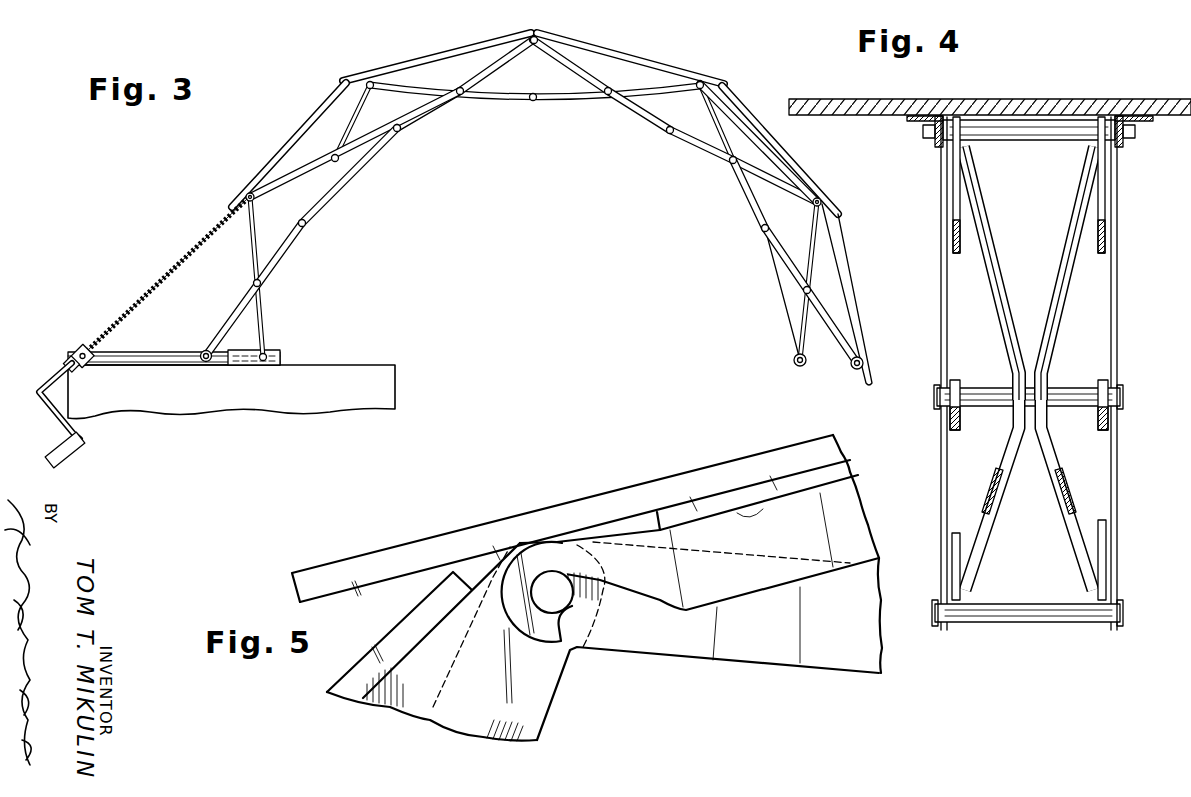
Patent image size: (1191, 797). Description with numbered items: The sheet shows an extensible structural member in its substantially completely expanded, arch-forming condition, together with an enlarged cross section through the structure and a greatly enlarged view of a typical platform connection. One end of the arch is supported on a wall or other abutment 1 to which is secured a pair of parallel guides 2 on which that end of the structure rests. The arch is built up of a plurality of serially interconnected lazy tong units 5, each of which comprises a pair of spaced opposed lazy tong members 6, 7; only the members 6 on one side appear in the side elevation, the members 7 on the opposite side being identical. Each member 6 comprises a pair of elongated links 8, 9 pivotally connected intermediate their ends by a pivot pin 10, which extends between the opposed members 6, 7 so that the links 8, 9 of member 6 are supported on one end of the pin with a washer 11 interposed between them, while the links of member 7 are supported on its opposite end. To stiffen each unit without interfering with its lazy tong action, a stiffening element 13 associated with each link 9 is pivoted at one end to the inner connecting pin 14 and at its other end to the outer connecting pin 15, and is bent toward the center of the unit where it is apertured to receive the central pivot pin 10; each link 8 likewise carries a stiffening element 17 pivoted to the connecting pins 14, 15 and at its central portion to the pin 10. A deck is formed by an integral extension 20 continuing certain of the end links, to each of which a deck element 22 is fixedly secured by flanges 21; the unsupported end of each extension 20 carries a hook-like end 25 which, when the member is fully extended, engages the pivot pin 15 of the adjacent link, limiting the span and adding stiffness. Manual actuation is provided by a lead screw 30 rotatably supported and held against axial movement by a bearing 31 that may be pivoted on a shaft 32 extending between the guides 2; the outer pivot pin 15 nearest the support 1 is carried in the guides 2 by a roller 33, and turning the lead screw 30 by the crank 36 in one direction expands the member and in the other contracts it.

In FIG. 3, the wall or abutment 1 is at (369, 357).
In FIG. 3, the parallel guides 2 is at (279, 350).
In FIG. 3, the lazy tong unit 5 is at (294, 266).
In FIG. 3, the lazy tong member 6 is at (240, 268).
In FIG. 4, the lazy tong member 6 is at (932, 360).
In FIG. 4, the lazy tong member 7 is at (1127, 355).
In FIG. 3, the link 8 is at (273, 191).
In FIG. 4, the link 8 is at (952, 199).
In FIG. 3, the link 9 is at (350, 128).
In FIG. 4, the link 9 is at (1118, 292).
In FIG. 3, the pivot pin 10 is at (265, 285).
In FIG. 4, the pivot pin 10 is at (1070, 389).
In FIG. 4, the washer 11 is at (953, 379).
In FIG. 4, the stiffening element 13 is at (987, 531).
In FIG. 3, the inner connecting pin 14 is at (307, 226).
In FIG. 4, the inner connecting pin 14 is at (993, 605).
In FIG. 3, the outer connecting pin 15 is at (250, 194).
In FIG. 4, the outer connecting pin 15 is at (1037, 140).
In FIG. 5, the outer connecting pin 15 is at (577, 612).
In FIG. 4, the stiffening element 17 is at (998, 327).
In FIG. 4, the extension 20 is at (1130, 145).
In FIG. 5, the extension 20 is at (836, 534).
In FIG. 4, the flanges 21 is at (907, 118).
In FIG. 5, the flanges 21 is at (852, 467).
In FIG. 3, the deck element 22 is at (318, 127).
In FIG. 4, the deck element 22 is at (1053, 102).
In FIG. 5, the deck element 22 is at (628, 492).
In FIG. 5, the hook-like end 25 is at (537, 640).
In FIG. 3, the lead screw 30 is at (172, 274).
In FIG. 3, the bearing 31 is at (87, 343).
In FIG. 3, the shaft 32 is at (67, 354).
In FIG. 3, the roller 33 is at (200, 352).
In FIG. 3, the crank 36 is at (84, 438).